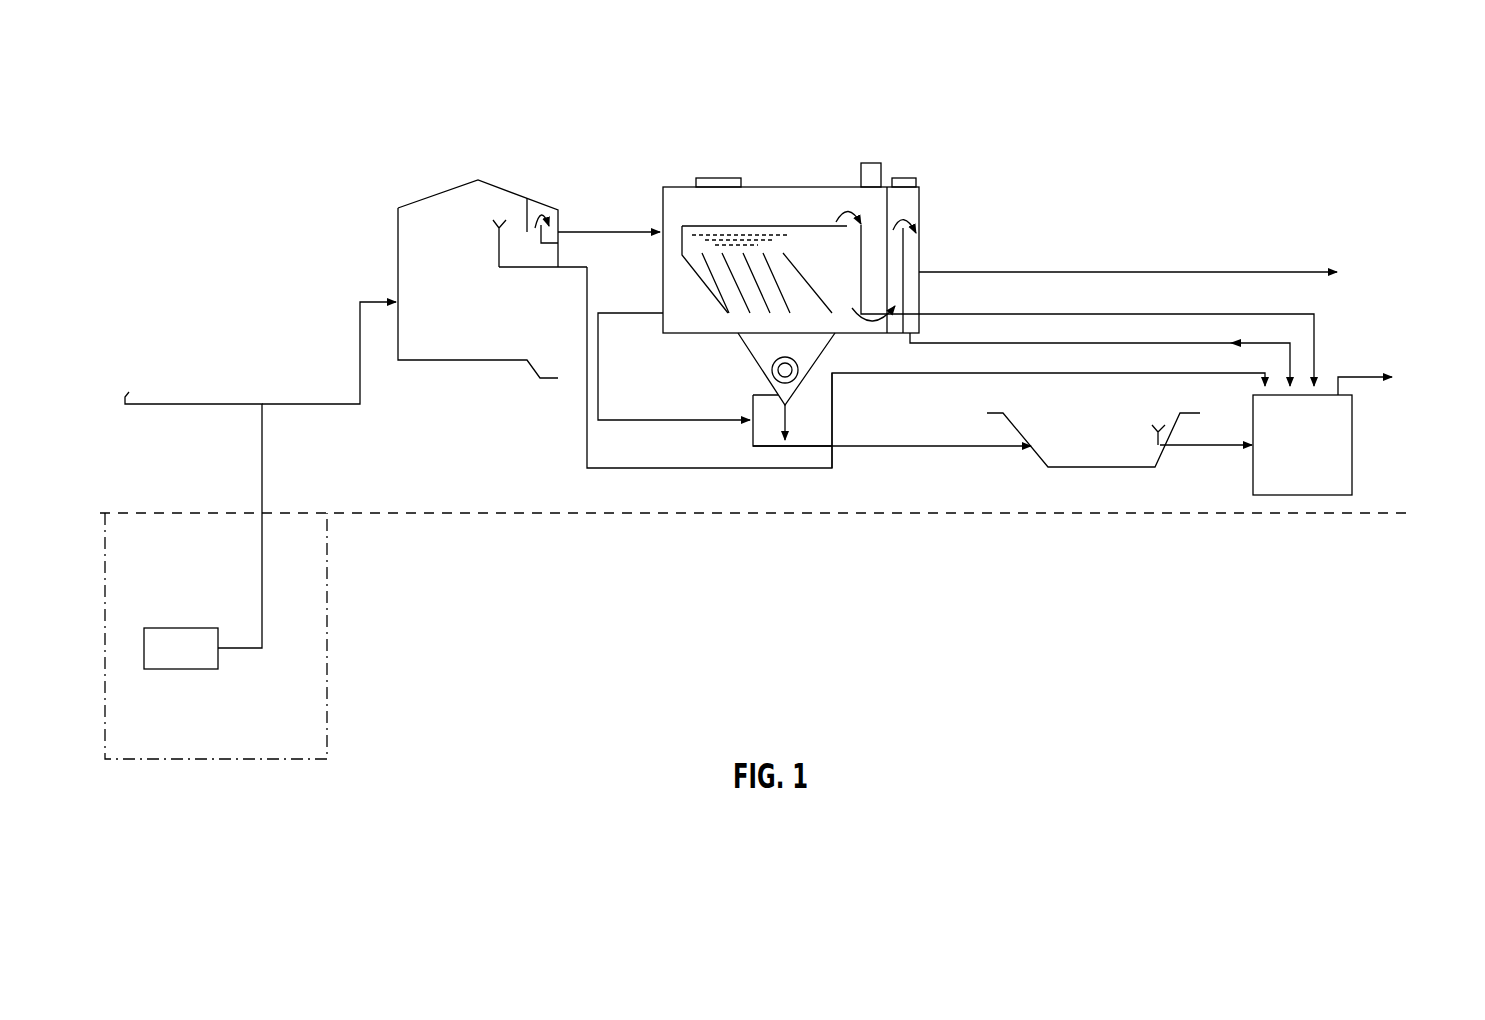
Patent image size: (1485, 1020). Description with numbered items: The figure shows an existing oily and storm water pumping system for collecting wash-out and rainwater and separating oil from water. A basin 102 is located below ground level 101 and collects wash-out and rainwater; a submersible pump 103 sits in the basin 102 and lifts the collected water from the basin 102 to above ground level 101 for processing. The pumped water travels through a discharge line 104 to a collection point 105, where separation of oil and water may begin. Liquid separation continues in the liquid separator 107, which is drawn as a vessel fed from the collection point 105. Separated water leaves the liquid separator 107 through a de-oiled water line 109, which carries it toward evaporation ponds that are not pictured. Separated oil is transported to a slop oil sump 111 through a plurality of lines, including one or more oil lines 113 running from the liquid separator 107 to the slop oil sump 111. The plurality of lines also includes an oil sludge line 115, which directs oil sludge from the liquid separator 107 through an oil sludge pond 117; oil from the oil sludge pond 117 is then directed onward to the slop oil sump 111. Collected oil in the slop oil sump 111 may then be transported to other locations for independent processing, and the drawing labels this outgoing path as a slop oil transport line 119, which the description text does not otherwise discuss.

The ground level 101 is at (682, 513).
The basin 102 is at (327, 603).
The submersible pump 103 is at (169, 628).
The discharge line 104 is at (262, 470).
The collection point 105 is at (478, 180).
The liquid separator 107 is at (796, 187).
The de-oiled water line 109 is at (1278, 272).
The slop oil sump 111 is at (1305, 495).
The oil line 113 is at (1023, 373).
The oil sludge line 115 is at (925, 446).
The oil sludge pond 117 is at (1128, 467).
The slop oil transport line 119 is at (1362, 377).